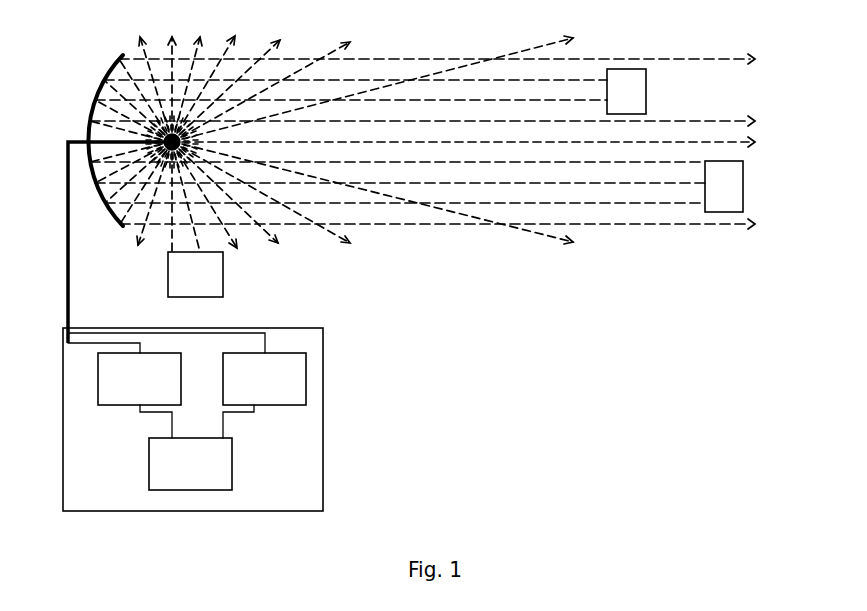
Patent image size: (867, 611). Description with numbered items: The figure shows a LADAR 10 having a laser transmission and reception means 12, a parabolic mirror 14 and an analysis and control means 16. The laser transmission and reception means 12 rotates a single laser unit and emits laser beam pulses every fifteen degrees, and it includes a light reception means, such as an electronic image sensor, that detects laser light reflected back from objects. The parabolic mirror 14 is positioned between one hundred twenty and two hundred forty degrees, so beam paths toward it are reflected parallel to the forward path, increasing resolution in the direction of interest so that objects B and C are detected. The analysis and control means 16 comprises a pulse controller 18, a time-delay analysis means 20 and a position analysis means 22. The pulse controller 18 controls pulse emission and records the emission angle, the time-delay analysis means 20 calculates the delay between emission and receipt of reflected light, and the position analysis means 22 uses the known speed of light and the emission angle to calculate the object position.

The LADAR 10 is at (388, 348).
The laser transmission and reception means 12 is at (162, 140).
The parabolic mirror 14 is at (109, 210).
The analysis and control means 16 is at (323, 413).
The pulse controller 18 is at (139, 379).
The time-delay analysis means 20 is at (264, 379).
The position analysis means 22 is at (190, 464).